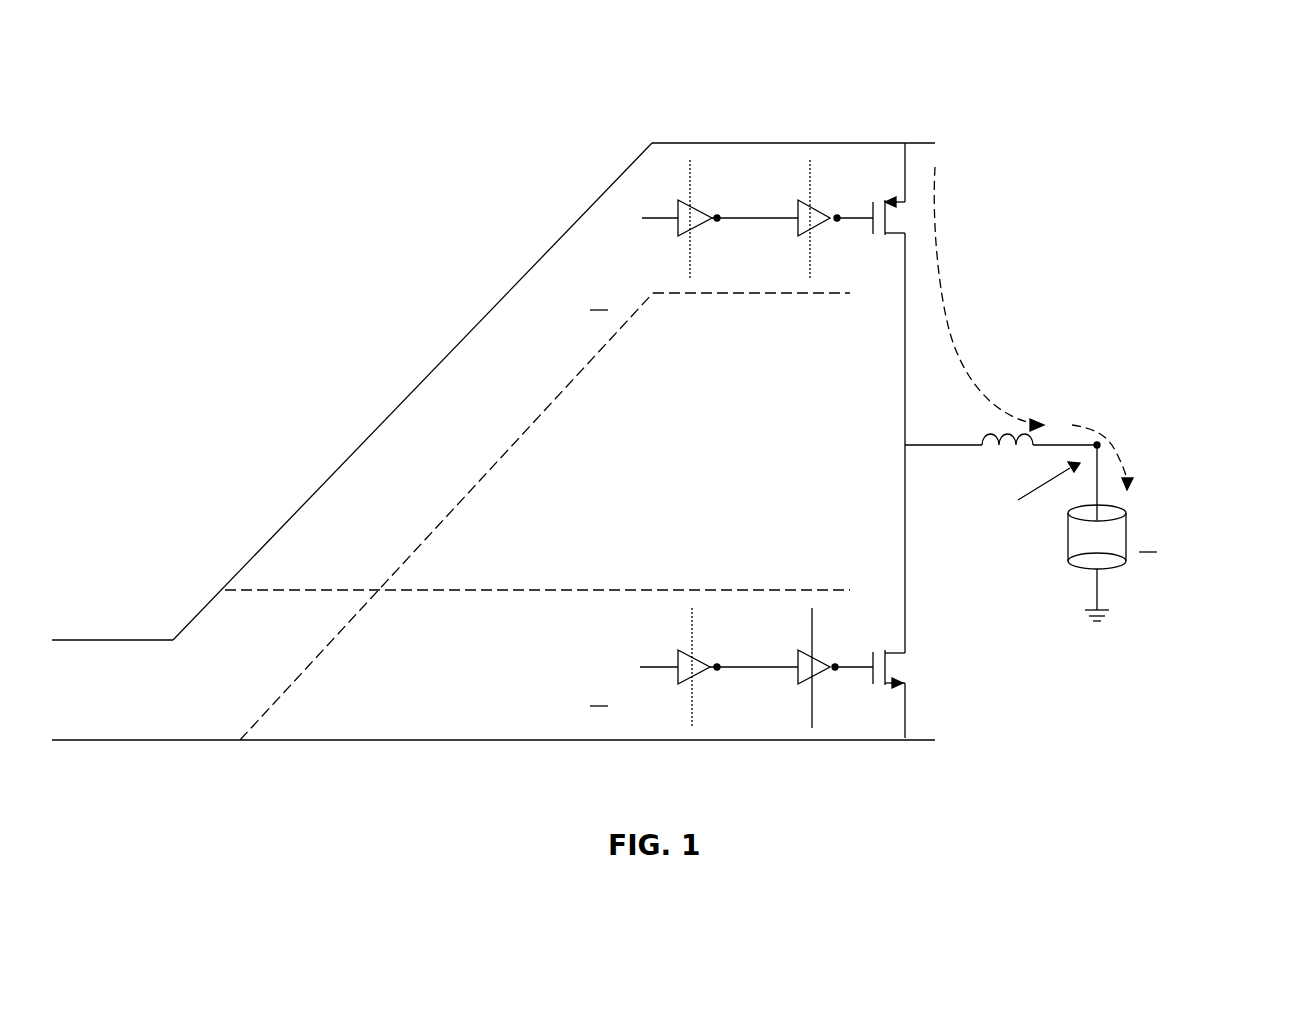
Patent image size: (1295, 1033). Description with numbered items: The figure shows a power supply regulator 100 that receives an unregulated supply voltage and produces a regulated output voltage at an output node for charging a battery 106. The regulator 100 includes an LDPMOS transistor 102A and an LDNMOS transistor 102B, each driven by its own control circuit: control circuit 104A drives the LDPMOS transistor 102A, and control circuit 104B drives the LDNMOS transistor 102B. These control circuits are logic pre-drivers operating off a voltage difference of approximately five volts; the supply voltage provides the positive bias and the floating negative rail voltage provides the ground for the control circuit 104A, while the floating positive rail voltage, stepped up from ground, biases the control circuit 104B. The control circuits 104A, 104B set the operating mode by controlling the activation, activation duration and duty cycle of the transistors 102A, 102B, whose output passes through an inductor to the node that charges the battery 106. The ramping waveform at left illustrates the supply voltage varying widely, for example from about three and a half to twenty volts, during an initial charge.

The power supply regulator 100 is at (1256, 80).
The LDPMOS transistor 102A is at (930, 216).
The LDNMOS transistor 102B is at (910, 680).
The control circuit 104A is at (700, 234).
The control circuit 104B is at (699, 667).
The battery 106 is at (1131, 533).